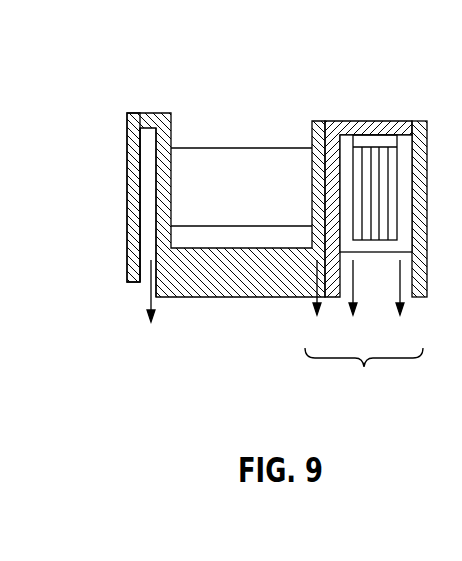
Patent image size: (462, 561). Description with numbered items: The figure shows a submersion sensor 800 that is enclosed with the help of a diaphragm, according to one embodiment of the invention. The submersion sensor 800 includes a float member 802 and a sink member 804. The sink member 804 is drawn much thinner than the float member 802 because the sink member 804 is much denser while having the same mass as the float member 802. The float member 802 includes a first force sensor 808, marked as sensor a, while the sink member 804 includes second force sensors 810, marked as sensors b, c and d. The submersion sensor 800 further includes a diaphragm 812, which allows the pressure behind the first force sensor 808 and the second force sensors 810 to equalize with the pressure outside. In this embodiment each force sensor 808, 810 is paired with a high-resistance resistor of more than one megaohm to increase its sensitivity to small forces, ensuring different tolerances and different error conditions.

The submersion sensor 800 is at (233, 218).
The float member 802 is at (265, 166).
The sink member 804 is at (381, 121).
The first force sensor 808 is at (146, 298).
The second force sensors 810 is at (341, 360).
The diaphragm 812 is at (127, 250).